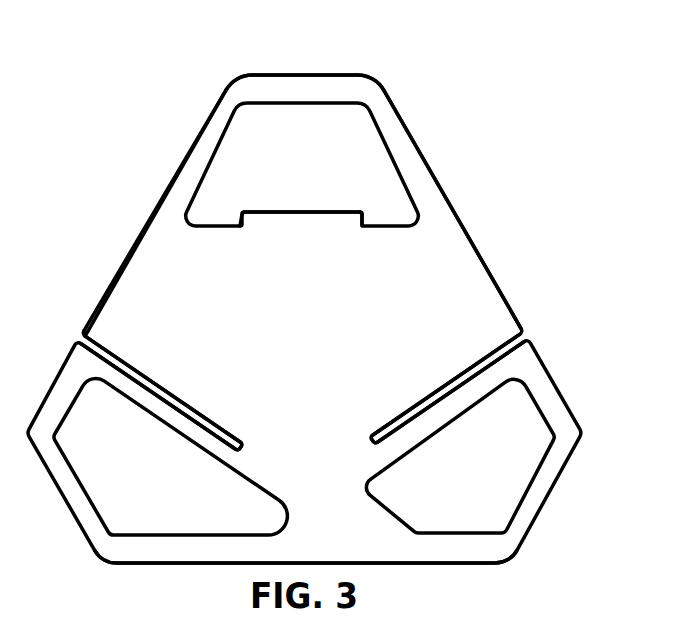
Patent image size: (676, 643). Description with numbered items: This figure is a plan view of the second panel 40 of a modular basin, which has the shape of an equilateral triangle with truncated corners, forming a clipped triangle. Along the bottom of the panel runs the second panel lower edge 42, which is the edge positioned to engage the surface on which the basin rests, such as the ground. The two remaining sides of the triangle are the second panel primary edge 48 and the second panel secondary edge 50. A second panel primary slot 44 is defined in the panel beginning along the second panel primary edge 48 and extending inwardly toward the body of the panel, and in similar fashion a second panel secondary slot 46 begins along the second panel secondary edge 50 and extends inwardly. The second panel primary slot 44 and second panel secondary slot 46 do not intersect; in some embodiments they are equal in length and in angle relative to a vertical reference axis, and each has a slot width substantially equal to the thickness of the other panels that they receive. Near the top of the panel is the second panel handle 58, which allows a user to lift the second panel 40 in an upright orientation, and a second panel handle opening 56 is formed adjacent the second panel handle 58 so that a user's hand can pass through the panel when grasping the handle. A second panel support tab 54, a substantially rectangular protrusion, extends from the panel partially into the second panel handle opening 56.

The second panel 40 is at (523, 190).
The second panel lower edge 42 is at (430, 565).
The second panel primary slot 44 is at (411, 408).
The second panel secondary slot 46 is at (154, 384).
The second panel primary edge 48 is at (495, 268).
The second panel secondary edge 50 is at (140, 228).
The second panel support tab 54 is at (278, 212).
The second panel handle opening 56 is at (350, 166).
The second panel handle 58 is at (288, 80).